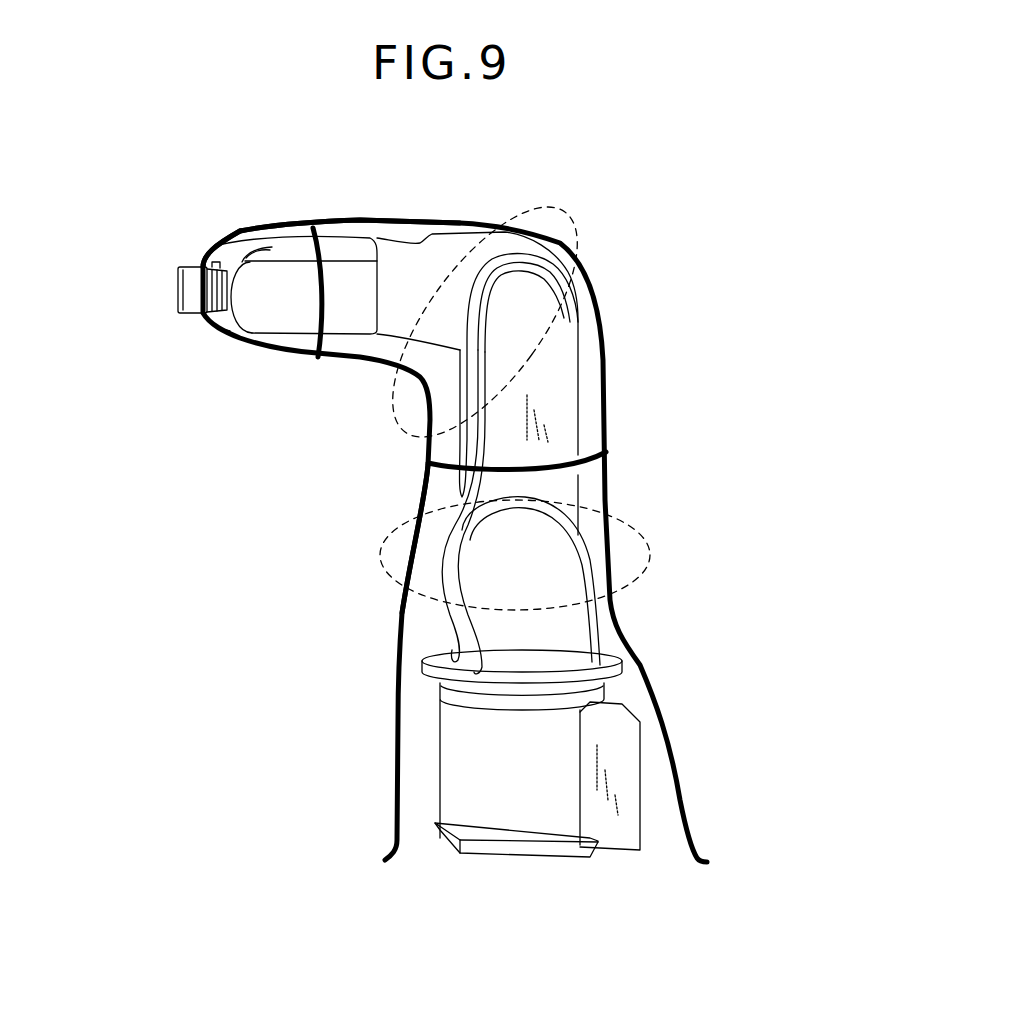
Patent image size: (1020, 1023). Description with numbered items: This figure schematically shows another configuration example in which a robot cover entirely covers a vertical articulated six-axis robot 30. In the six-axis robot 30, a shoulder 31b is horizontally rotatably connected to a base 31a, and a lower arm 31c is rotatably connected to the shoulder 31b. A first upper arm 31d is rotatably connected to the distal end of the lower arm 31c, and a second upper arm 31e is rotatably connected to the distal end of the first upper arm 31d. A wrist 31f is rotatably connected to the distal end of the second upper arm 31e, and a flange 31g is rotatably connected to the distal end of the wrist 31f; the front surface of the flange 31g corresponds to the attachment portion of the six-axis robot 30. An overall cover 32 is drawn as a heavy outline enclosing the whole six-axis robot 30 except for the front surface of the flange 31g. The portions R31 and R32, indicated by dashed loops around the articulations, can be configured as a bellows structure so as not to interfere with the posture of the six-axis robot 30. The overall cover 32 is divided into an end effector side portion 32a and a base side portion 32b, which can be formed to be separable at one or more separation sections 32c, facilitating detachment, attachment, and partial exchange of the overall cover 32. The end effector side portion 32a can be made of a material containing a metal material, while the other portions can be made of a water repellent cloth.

The six-axis robot 30 is at (578, 371).
The base 31a is at (645, 768).
The shoulder 31b is at (592, 628).
The lower arm 31c is at (577, 423).
The first upper arm 31d is at (420, 240).
The second upper arm 31e is at (330, 232).
The wrist 31f is at (228, 243).
The flange 31g is at (179, 292).
The overall cover 32 is at (398, 697).
The end effector side portion 32a is at (226, 337).
The base side portion 32b is at (404, 613).
The separation section 32c is at (324, 354).
The articulation portion R31 is at (567, 215).
The articulation portion R32 is at (647, 550).